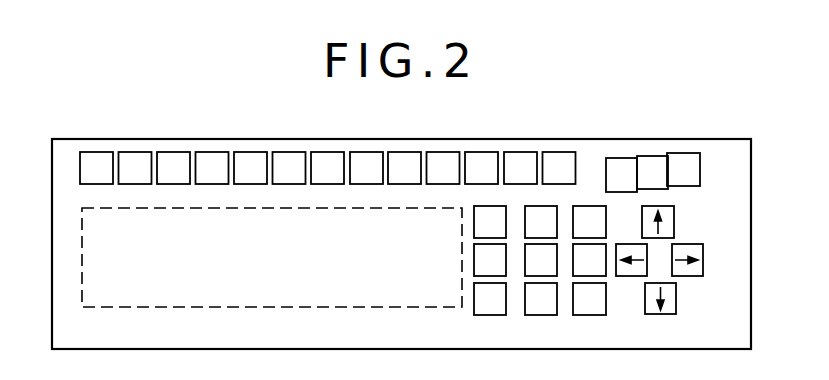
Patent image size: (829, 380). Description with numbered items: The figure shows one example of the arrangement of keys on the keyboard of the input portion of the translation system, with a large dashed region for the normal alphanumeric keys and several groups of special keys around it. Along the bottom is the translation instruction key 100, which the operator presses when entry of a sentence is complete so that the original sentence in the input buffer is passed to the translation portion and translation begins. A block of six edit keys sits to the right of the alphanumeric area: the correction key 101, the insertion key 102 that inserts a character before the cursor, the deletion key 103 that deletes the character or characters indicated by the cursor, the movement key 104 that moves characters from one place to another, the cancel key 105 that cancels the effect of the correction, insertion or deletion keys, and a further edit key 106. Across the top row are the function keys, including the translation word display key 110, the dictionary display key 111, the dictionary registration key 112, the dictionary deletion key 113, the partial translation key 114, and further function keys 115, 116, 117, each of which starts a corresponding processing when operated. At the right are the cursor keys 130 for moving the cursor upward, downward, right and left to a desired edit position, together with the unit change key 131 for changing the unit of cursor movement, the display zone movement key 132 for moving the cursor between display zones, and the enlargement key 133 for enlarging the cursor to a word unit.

The translation instruction key 100 is at (401, 244).
The correction key 101 is at (490, 299).
The insertion key 102 is at (490, 260).
The deletion key 103 is at (490, 222).
The movement key 104 is at (541, 299).
The cancel key 105 is at (541, 260).
The edit key 106 is at (541, 222).
The translation word display key 110 is at (96, 168).
The dictionary display key 111 is at (135, 168).
The dictionary registration key 112 is at (173, 168).
The dictionary deletion key 113 is at (212, 168).
The partial translation key 114 is at (250, 168).
The function key 115 is at (289, 168).
The function key 116 is at (327, 168).
The function key 117 is at (366, 168).
The cursor keys 130 is at (646, 342).
The unit change key 131 is at (621, 175).
The display zone movement key 132 is at (652, 172).
The enlargement key 133 is at (683, 169).